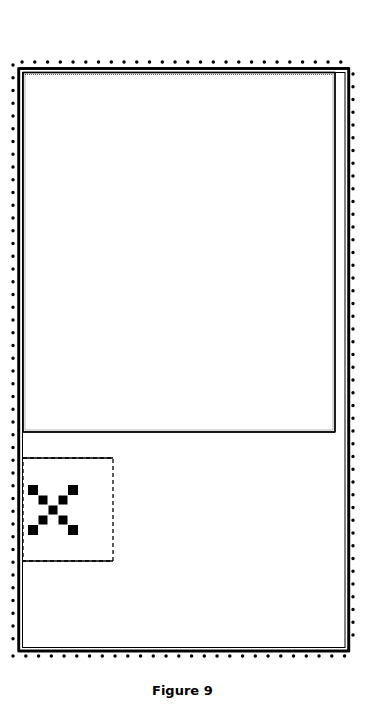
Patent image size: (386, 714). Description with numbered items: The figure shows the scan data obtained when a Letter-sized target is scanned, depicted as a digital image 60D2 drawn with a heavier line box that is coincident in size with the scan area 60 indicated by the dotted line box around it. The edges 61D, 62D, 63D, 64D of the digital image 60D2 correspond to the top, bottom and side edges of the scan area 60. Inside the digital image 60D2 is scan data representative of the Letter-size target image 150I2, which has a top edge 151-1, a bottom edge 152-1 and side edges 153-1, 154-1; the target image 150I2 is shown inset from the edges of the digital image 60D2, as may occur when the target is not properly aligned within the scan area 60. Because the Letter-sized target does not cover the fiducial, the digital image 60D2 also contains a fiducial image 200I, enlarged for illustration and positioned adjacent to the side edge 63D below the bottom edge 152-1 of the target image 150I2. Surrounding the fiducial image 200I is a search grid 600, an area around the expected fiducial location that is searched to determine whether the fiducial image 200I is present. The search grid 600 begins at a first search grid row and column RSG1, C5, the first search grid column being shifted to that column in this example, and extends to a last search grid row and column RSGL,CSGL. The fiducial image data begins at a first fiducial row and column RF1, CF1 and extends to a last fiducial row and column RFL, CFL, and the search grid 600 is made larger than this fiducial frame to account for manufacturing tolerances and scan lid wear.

The scan area 60 is at (35, 657).
The digital image 60D2 is at (53, 63).
The top edge of digital image 61D is at (177, 62).
The bottom edge of digital image 62D is at (147, 650).
The side edge of digital image 63D is at (19, 212).
The side edge of digital image 64D is at (349, 237).
The Letter-size target image 150I2 is at (187, 200).
The top edge of target image 151-1 is at (75, 72).
The bottom edge of target image 152-1 is at (175, 432).
The side edge of target image 153-1 is at (25, 165).
The side edge of target image 154-1 is at (334, 160).
The fiducial image 200I is at (92, 491).
The search grid 600 is at (113, 517).
The row select group 1, column 5 RSG1, C5 is at (23, 457).
The first row, first column pixel RF1, CF1 is at (25, 485).
The last row, last column pixel RFL, CFL is at (76, 533).
The last search grid row and column RSGL,CSGL is at (120, 573).